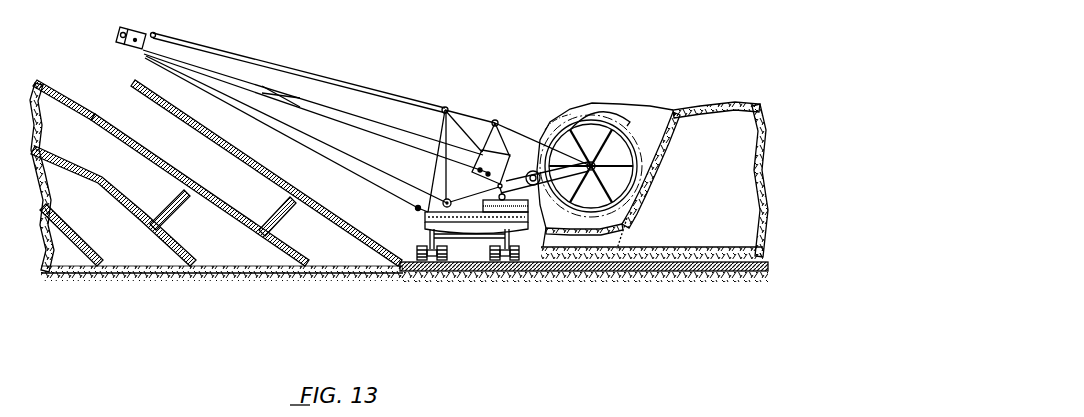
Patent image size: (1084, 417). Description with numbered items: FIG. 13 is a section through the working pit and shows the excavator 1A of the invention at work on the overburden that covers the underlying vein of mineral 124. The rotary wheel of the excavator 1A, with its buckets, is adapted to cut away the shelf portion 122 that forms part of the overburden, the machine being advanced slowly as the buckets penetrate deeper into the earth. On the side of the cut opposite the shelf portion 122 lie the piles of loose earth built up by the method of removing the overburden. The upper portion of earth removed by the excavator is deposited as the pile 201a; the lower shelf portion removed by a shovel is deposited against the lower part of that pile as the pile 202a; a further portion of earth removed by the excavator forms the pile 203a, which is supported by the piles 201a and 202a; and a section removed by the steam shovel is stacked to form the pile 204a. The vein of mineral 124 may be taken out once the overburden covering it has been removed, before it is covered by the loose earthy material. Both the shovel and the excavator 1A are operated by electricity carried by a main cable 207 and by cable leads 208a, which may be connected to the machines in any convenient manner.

The pile of earth 201a is at (67, 210).
The pile of earth 203a is at (118, 163).
The pile of earth 202a is at (240, 250).
The pile of earth 204a is at (345, 245).
The excavator 1A is at (469, 108).
The cable leads 208a is at (593, 103).
The shelf portion 122 is at (650, 164).
The main cable 207 is at (760, 102).
The vein of mineral 124 is at (572, 262).